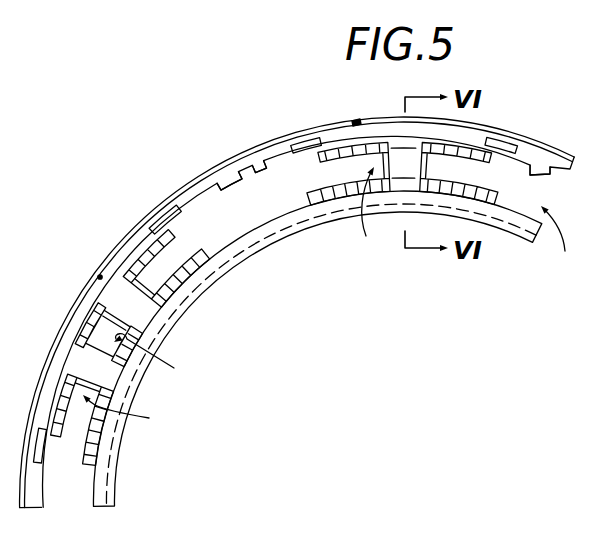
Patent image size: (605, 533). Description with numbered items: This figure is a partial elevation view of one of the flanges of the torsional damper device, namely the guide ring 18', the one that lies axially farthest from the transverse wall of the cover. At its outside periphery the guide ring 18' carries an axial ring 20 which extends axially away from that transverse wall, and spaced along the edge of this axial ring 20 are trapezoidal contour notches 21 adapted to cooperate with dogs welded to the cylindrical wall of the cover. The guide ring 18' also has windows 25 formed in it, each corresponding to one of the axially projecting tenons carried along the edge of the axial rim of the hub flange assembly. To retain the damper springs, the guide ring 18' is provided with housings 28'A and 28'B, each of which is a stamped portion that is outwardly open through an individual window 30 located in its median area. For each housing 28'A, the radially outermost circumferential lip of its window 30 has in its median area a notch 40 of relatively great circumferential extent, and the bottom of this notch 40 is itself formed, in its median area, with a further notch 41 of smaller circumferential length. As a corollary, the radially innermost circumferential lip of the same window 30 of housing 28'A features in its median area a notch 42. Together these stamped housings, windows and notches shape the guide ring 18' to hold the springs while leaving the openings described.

The guide ring 18' is at (297, 312).
The axial ring 20 is at (127, 242).
The trapezoidal contour notches 21 is at (359, 120).
The windows 25 is at (166, 216).
The housing 28'A is at (341, 298).
The housing 28'B is at (163, 359).
The window 30 is at (473, 180).
The notch 40 is at (277, 172).
The notch 41 is at (232, 182).
The notch 42 is at (263, 238).